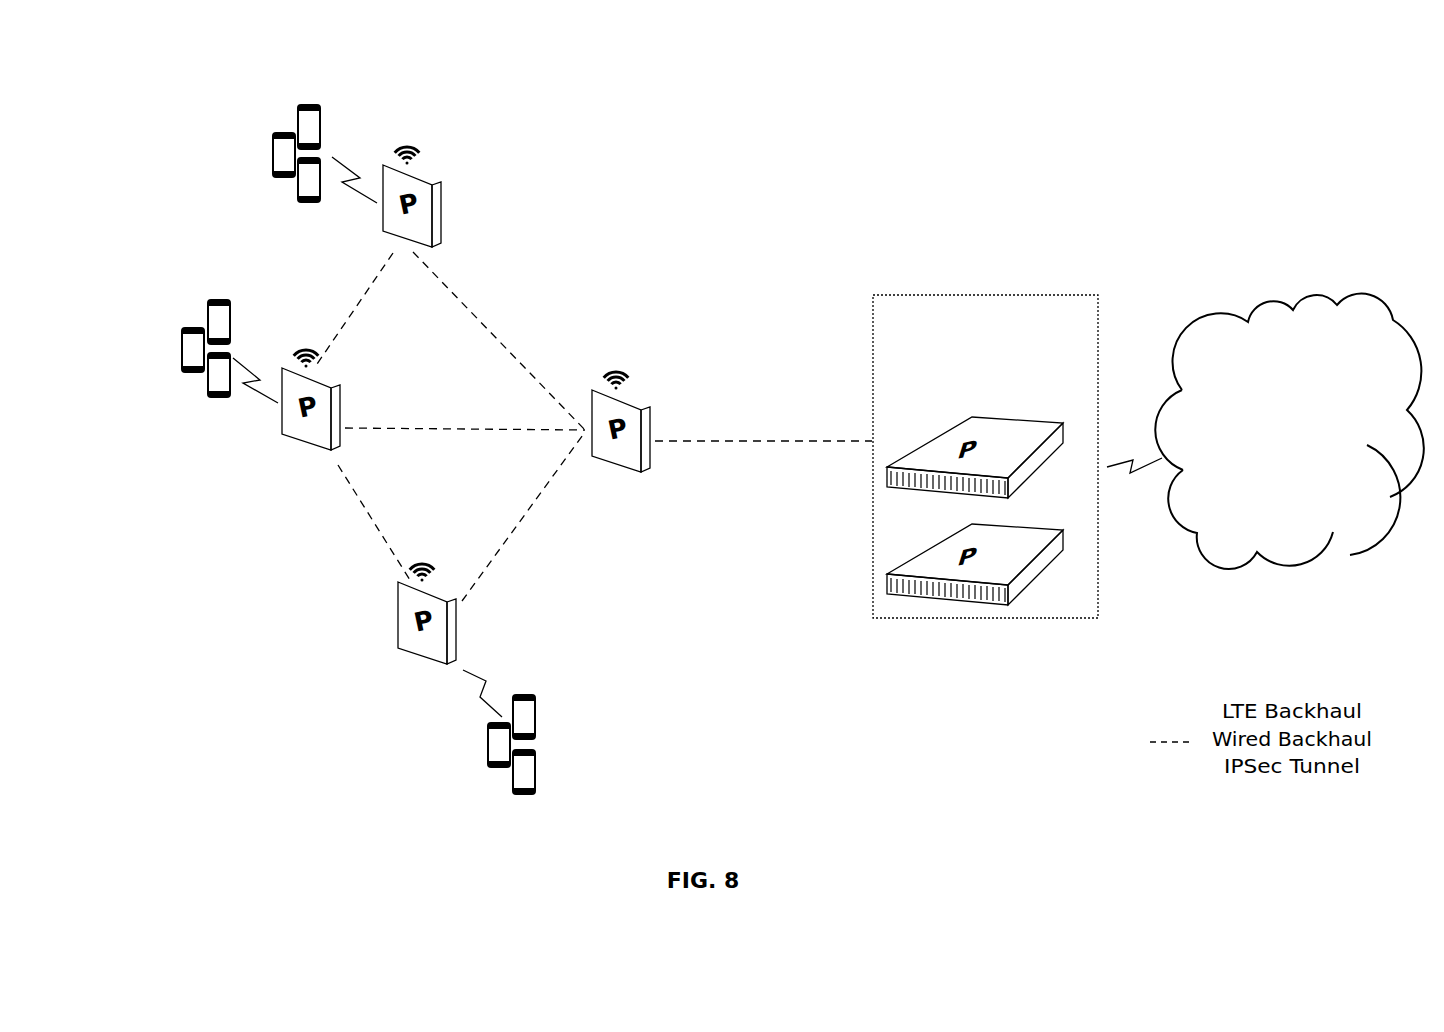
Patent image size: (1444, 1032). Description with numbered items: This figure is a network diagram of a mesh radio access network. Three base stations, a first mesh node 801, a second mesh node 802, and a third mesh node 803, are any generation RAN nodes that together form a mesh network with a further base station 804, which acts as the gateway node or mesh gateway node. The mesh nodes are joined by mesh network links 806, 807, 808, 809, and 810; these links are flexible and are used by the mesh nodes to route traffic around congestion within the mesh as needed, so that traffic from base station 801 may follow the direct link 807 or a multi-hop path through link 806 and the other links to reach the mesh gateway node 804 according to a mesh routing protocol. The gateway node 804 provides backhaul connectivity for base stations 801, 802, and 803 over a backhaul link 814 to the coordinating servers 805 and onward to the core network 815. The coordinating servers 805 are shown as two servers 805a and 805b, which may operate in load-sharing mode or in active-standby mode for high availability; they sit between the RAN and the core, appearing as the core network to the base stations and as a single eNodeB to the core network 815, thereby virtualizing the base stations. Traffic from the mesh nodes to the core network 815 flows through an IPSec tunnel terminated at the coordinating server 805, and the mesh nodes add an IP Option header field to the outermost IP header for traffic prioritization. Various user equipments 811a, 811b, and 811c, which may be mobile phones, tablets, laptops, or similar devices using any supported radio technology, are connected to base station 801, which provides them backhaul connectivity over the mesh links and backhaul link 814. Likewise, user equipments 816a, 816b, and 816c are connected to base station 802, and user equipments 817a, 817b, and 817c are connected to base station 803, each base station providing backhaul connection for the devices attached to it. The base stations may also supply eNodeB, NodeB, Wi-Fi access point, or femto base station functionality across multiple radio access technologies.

The mesh node 1 801 is at (428, 177).
The mesh node 2 802 is at (282, 443).
The mesh node 3 803 is at (410, 668).
The base station 804 is at (638, 400).
The coordinating servers 805 is at (985, 428).
The coordinating server 805a is at (1042, 415).
The coordinating server 805b is at (1040, 523).
The mesh network link 806 is at (355, 323).
The mesh network link 807 is at (510, 345).
The mesh network link 808 is at (357, 515).
The mesh network link 809 is at (548, 503).
The mesh network link 810 is at (460, 422).
The user equipment 811a is at (270, 140).
The user equipment 811b is at (298, 203).
The user equipment 811c is at (325, 130).
The backhaul link 814 is at (782, 450).
The core network 815 is at (1290, 282).
The 4G UE 816a is at (178, 353).
The 3G UE 816b is at (217, 297).
The 5G UE 816c is at (202, 383).
The Wi-Fi UE 817a is at (485, 737).
The 3G UE 817b is at (523, 798).
The 4G UE 817c is at (525, 691).